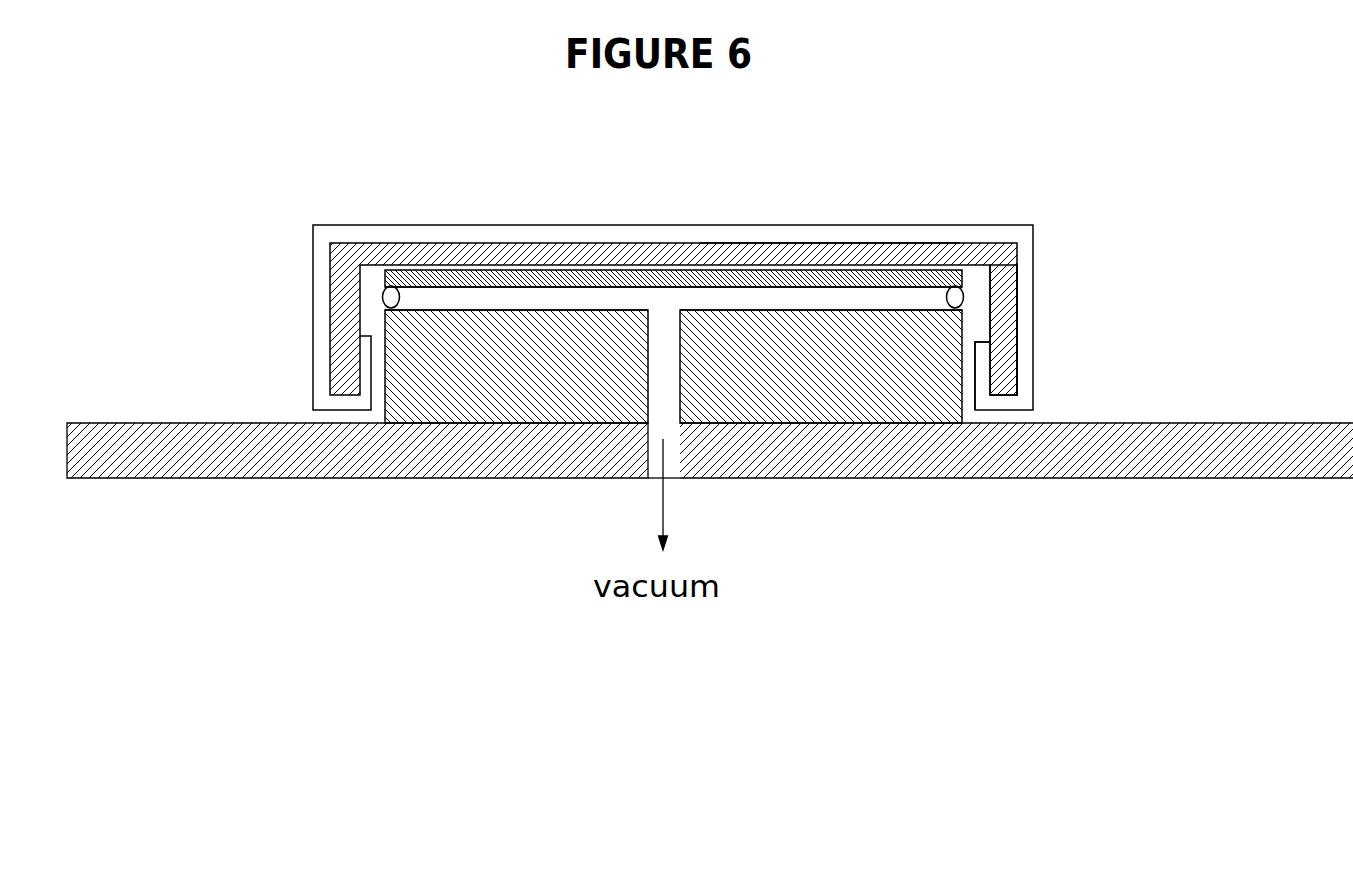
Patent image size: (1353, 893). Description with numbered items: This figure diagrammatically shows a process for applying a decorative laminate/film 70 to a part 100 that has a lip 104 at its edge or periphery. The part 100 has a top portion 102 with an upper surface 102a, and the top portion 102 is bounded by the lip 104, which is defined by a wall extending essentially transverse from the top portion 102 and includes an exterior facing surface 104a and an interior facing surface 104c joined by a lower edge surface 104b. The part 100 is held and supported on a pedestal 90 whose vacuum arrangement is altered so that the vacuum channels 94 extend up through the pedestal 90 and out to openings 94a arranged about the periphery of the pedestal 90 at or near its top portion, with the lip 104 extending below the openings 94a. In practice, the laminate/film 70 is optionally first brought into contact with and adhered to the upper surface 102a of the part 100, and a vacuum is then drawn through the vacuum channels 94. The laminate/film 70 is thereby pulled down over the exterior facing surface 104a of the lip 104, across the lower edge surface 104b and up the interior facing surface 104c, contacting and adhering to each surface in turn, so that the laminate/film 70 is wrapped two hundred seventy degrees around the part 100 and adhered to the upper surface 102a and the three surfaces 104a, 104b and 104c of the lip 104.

The laminate/film 70 is at (673, 271).
The pedestal 90 is at (673, 436).
The vacuum channels 94 is at (674, 208).
The openings 94a is at (702, 232).
The part 100 is at (673, 272).
The top portion 102 is at (673, 208).
The upper surface 102a is at (830, 211).
The lip 104 is at (1083, 330).
The exterior facing surface 104a is at (1090, 331).
The lower edge surface 104b is at (1088, 468).
The interior facing surface 104c is at (898, 444).